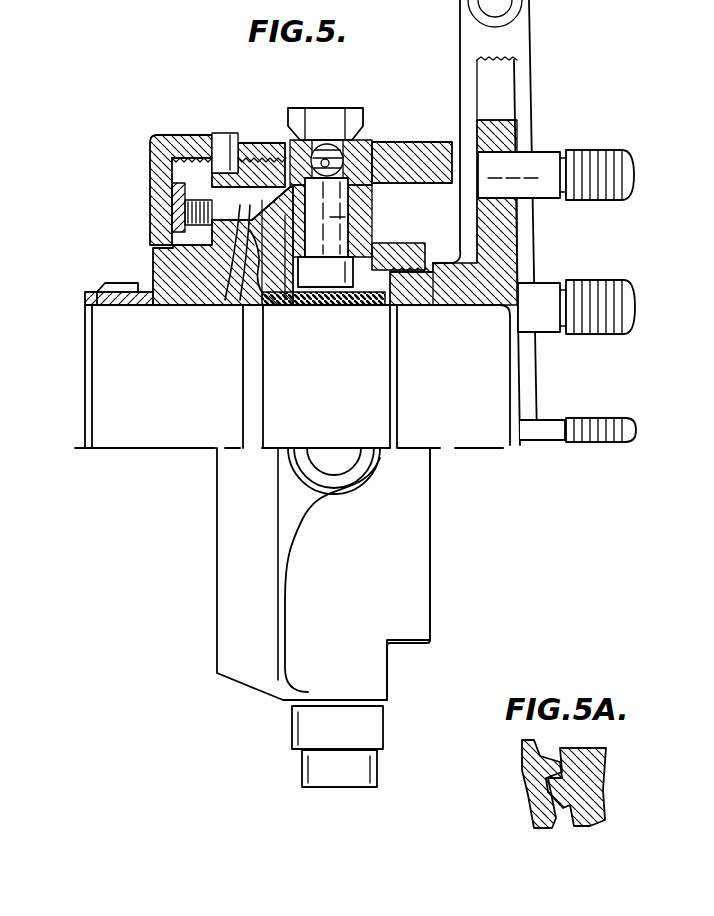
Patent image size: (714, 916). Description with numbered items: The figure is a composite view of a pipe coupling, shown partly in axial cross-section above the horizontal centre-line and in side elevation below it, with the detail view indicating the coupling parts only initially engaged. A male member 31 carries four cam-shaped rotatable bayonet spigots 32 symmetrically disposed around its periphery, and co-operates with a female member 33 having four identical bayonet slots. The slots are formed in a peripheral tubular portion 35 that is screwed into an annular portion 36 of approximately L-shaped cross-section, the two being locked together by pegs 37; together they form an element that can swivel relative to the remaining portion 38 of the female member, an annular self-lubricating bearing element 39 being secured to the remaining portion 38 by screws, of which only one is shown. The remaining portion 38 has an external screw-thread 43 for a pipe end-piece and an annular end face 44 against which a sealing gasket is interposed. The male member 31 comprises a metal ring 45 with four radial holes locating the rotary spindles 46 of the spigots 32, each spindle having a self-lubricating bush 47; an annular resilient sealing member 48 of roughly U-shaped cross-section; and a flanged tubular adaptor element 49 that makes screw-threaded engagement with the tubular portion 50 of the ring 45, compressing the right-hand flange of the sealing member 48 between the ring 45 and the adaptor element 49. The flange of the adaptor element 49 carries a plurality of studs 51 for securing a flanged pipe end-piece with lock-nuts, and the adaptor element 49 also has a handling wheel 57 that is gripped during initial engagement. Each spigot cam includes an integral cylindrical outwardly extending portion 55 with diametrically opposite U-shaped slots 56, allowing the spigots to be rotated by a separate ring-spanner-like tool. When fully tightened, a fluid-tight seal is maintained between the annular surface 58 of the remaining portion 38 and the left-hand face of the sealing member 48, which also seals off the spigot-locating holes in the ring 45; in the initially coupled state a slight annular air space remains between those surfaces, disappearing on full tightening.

In FIG. 5, the male member 31 is at (412, 640).
In FIG. 5, the bayonet spigots 32 is at (358, 155).
In FIG. 5, the female member 33 is at (436, 150).
In FIG. 5, the peripheral tubular portion 35 is at (260, 150).
In FIG. 5, the annular portion 36 is at (153, 162).
In FIG. 5, the pegs 37 is at (222, 145).
In FIG. 5, the remaining portion 38 is at (160, 278).
In FIG. 5, the self-lubricating bearing element 39 is at (176, 195).
In FIG. 5, the external screw-thread 43 is at (112, 283).
In FIG. 5, the annular end face 44 is at (86, 300).
In FIG. 5, the metal ring 45 is at (356, 226).
In FIG. 5, the rotary spindles 46 is at (355, 216).
In FIG. 5, the self-lubricating bush 47 is at (356, 207).
In FIG. 5, the annular resilient sealing member 48 is at (316, 306).
In FIG. 5A, the annular resilient sealing member 48 is at (582, 828).
In FIG. 5, the flanged tubular adaptor element 49 is at (486, 266).
In FIG. 5, the tubular portion 50 is at (400, 262).
In FIG. 5, the studs 51 is at (620, 282).
In FIG. 5, the cylindrical outwardly extending portion 55 is at (318, 122).
In FIG. 5, the U-shaped slots 56 is at (278, 129).
In FIG. 5, the handling wheel 57 is at (515, 48).
In FIG. 5, the annular surface 58 is at (226, 305).
In FIG. 5A, the annular surface 58 is at (560, 832).